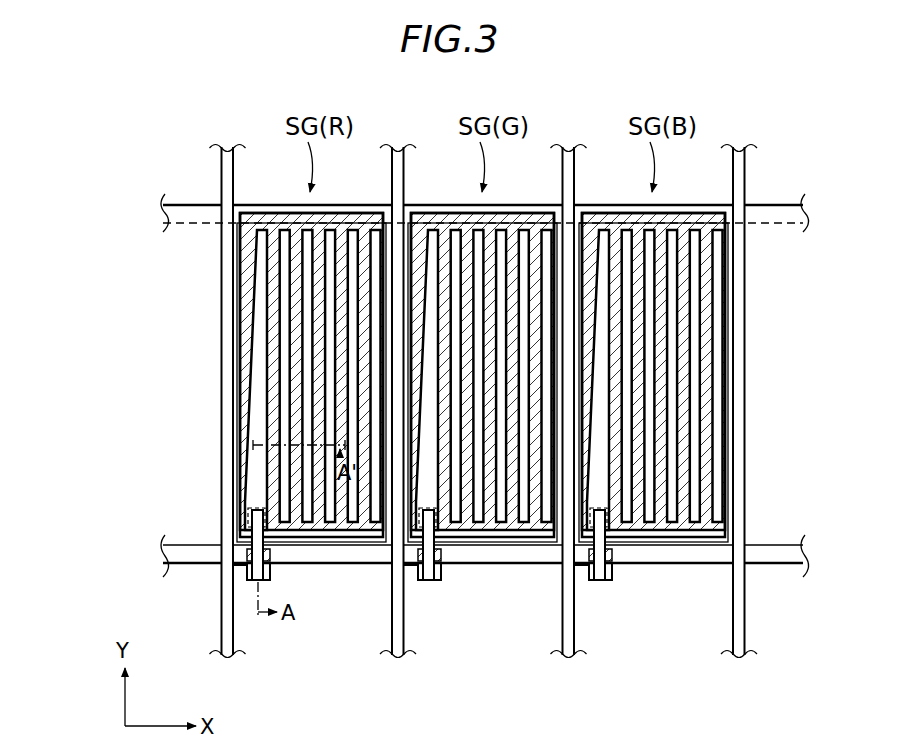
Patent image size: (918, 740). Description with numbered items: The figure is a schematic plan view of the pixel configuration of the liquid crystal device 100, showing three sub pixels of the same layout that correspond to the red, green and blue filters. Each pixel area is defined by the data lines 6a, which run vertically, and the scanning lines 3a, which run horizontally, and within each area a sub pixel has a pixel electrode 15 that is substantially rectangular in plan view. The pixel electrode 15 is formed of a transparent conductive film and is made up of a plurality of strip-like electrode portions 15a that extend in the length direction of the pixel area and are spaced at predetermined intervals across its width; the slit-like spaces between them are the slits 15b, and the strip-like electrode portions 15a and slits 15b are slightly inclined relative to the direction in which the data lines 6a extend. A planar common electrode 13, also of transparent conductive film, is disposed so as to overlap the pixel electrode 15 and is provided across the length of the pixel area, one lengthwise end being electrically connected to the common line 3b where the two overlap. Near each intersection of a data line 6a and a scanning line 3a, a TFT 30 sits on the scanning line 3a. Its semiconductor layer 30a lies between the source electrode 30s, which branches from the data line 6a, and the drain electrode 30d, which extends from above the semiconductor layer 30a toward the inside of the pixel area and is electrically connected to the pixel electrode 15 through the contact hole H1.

The liquid crystal device 100 is at (801, 127).
The data line 6a is at (231, 148).
The scanning line 3a is at (808, 548).
The common line 3b is at (808, 210).
The pixel electrode 15 is at (419, 375).
The strip-like electrode portion 15a is at (290, 318).
The slit 15b is at (328, 388).
The common electrode 13 is at (247, 465).
The contact hole H1 is at (240, 520).
The TFT 30 is at (312, 561).
The drain electrode 30d is at (240, 543).
The semiconductor layer 30a is at (242, 562).
The source electrode 30s is at (245, 578).